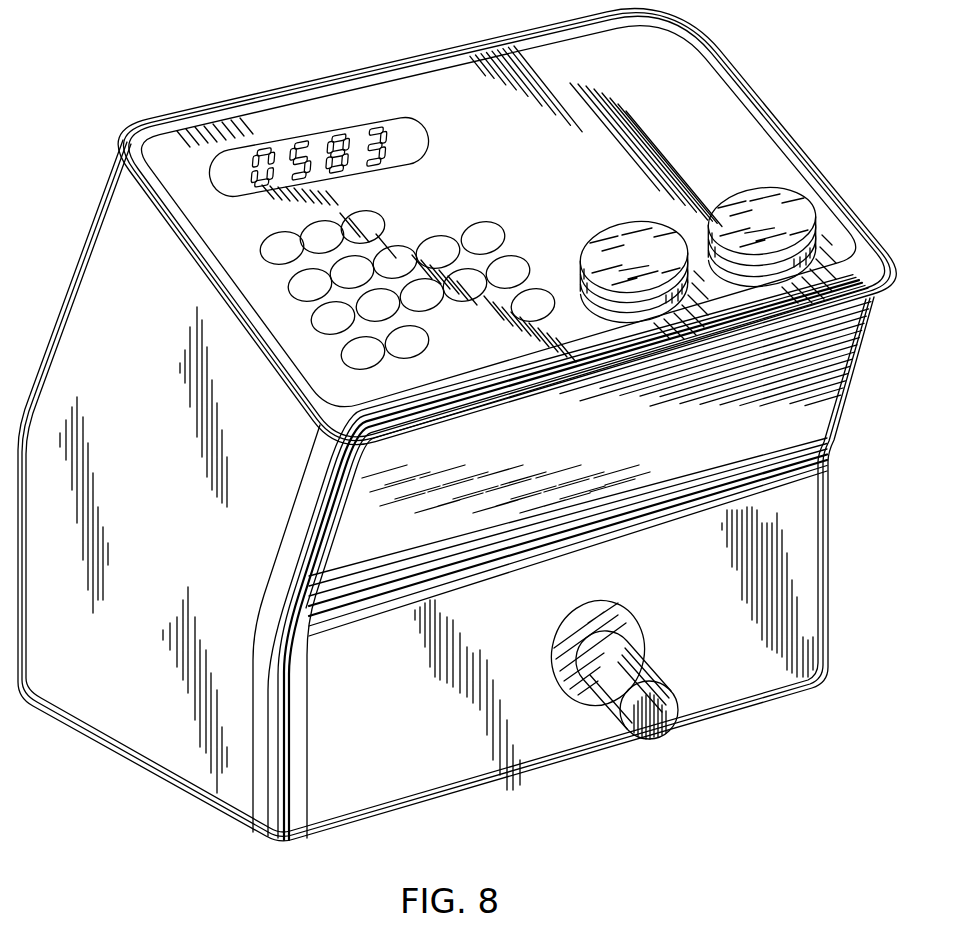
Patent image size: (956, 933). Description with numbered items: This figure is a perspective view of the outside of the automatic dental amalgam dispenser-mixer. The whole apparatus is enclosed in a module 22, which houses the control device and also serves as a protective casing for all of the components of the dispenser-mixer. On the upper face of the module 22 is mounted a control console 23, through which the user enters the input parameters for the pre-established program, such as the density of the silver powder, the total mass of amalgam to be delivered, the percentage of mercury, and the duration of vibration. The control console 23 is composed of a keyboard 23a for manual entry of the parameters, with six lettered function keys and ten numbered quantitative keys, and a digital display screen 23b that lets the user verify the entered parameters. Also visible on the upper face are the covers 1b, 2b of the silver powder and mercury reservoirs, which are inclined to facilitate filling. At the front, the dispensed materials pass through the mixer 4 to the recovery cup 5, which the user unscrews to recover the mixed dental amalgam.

The module 22 is at (61, 320).
The control console 23 is at (460, 191).
The keyboard 23a is at (496, 227).
The digital display screen 23b is at (418, 125).
The cover 1b is at (628, 263).
The cover 2b is at (762, 232).
The mixer 4 is at (584, 698).
The recovery cup 5 is at (657, 708).